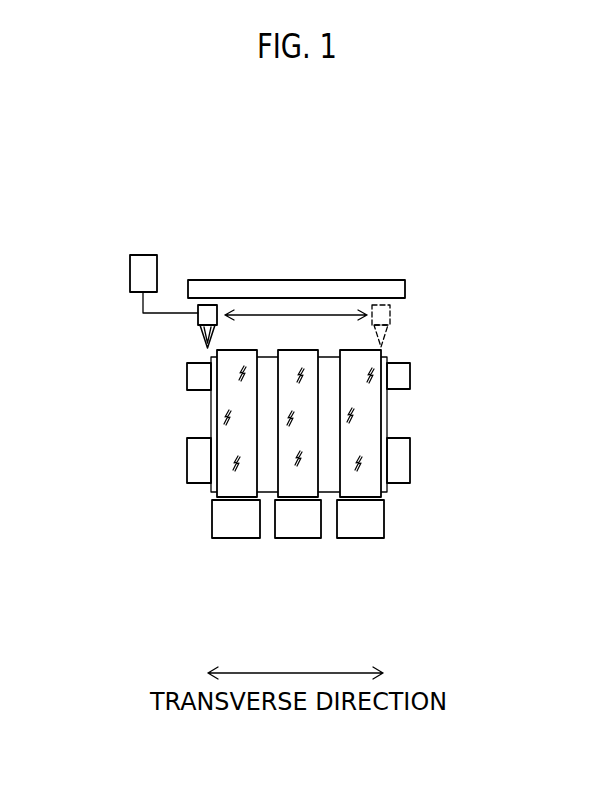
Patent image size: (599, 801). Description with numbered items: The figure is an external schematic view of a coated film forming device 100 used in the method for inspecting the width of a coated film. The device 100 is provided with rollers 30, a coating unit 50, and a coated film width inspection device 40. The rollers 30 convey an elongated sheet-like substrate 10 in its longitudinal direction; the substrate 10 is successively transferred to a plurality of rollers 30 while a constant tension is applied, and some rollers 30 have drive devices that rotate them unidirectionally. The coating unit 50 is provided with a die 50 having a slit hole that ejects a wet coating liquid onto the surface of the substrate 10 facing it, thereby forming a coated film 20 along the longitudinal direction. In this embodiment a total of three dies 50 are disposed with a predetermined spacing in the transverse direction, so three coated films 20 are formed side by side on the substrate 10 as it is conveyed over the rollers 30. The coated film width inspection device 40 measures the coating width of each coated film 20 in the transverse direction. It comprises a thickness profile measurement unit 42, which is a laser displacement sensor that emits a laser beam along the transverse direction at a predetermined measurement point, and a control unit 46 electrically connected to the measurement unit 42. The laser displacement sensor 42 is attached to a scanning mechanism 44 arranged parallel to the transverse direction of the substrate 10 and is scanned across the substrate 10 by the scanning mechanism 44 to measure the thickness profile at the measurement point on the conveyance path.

The coated film forming device 100 is at (364, 192).
The elongated sheet-like substrate 10 is at (205, 420).
The coated film 20 is at (222, 477).
The roller 30 is at (196, 389).
The coated film width inspection device 40 is at (119, 259).
The thickness profile measurement unit 42 is at (197, 322).
The scanning mechanism 44 is at (383, 280).
The control unit 46 is at (142, 255).
The coating unit 50 is at (238, 527).